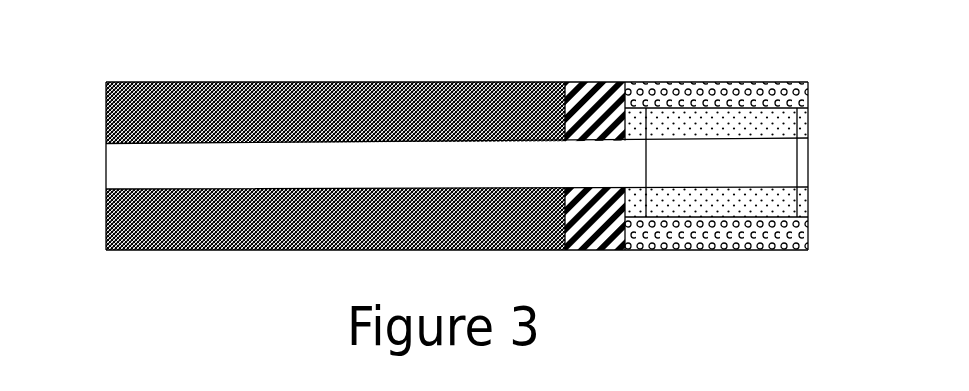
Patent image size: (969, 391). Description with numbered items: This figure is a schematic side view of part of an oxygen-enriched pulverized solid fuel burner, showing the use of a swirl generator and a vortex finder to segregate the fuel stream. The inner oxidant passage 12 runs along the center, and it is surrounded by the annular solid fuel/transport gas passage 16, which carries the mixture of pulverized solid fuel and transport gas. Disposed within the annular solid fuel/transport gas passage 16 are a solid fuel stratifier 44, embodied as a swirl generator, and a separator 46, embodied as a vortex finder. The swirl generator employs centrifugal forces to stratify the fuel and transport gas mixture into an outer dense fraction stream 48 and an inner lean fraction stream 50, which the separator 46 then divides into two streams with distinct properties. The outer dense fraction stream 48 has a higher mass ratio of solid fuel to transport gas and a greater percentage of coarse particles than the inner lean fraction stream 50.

The inner oxidant passage 12 is at (127, 165).
The annular solid fuel/transport gas passage 16 is at (205, 82).
The solid fuel stratifier 44 is at (591, 82).
The separator 46 is at (800, 158).
The outer dense fraction stream 48 is at (776, 82).
The inner lean fraction stream 50 is at (800, 198).